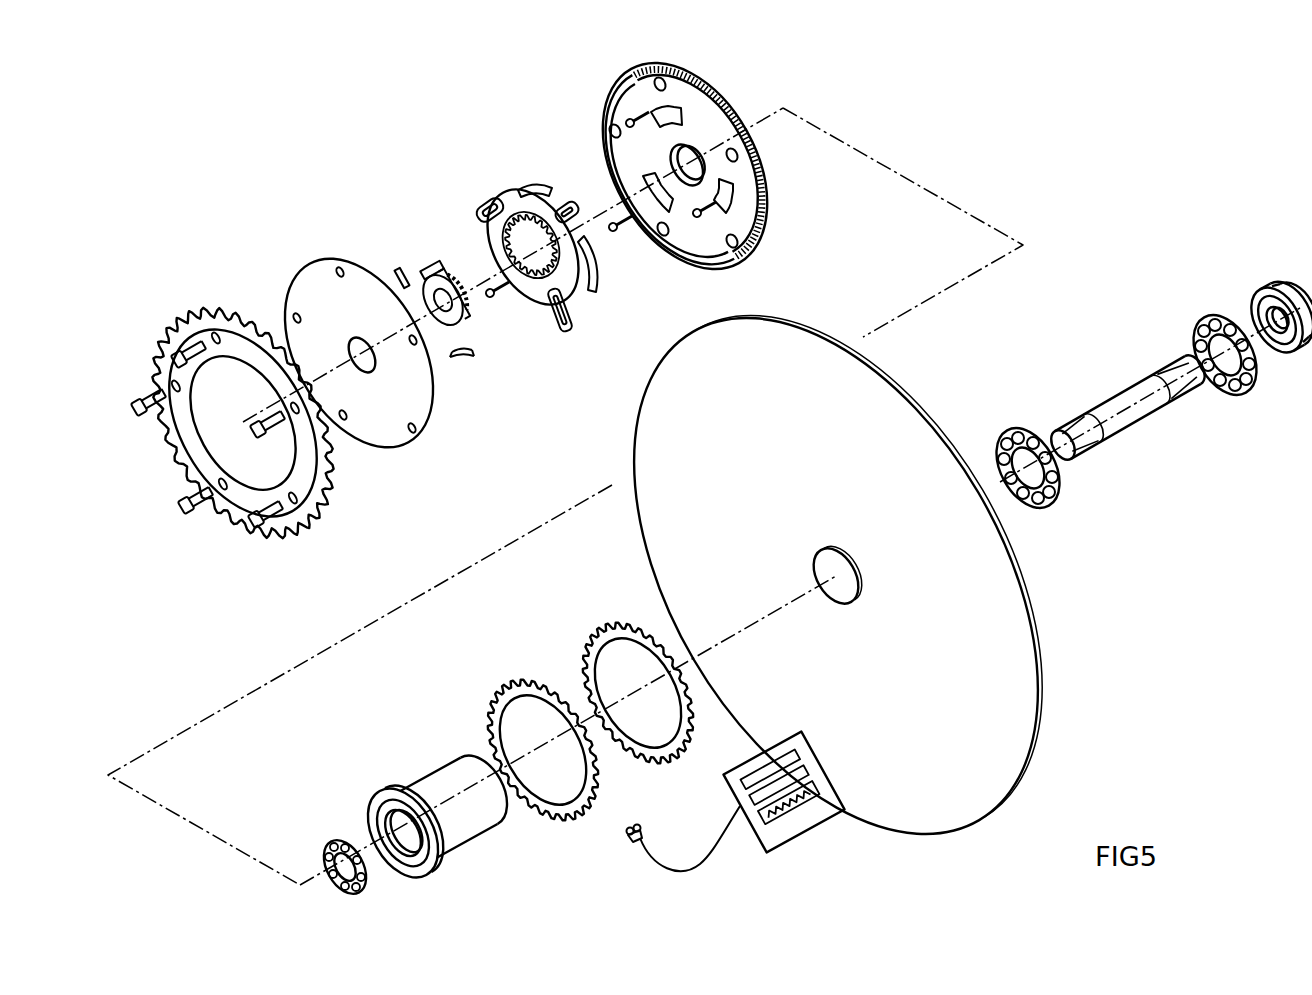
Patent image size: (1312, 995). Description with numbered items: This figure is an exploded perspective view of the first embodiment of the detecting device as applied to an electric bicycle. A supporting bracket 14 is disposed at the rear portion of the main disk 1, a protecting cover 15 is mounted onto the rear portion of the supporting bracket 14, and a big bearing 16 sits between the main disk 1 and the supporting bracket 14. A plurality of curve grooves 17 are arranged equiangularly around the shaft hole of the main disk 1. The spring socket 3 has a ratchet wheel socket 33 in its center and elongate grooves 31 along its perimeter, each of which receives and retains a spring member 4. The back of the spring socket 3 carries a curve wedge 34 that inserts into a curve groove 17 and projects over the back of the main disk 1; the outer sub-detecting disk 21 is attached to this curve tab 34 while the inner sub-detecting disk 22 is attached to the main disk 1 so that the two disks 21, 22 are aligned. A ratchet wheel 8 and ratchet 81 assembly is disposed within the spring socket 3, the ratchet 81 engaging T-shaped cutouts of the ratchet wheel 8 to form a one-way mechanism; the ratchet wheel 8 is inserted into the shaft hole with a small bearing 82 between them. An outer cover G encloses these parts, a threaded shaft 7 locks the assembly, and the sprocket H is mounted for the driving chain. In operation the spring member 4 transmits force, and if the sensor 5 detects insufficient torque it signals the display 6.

The main disk 1 is at (694, 165).
The spring socket 3 is at (535, 244).
The spring member 4 is at (516, 271).
The sensor 5 is at (660, 847).
The display 6 is at (784, 814).
The shaft 7 is at (1127, 421).
The ratchet wheel 8 is at (448, 359).
The supporting bracket 14 is at (438, 789).
The protecting cover 15 is at (837, 575).
The big bearing 16 is at (1034, 435).
The curve groove 17 is at (718, 163).
The outer sub-detecting disk 21 is at (521, 726).
The inner sub-detecting disk 22 is at (624, 673).
The elongate groove 31 is at (544, 206).
The ratchet wheel socket 33 is at (526, 277).
The curve wedge 34 is at (550, 229).
The ratchet 81 is at (424, 305).
The small bearing 82 is at (327, 826).
The outer cover G is at (355, 345).
The sprocket H is at (243, 411).